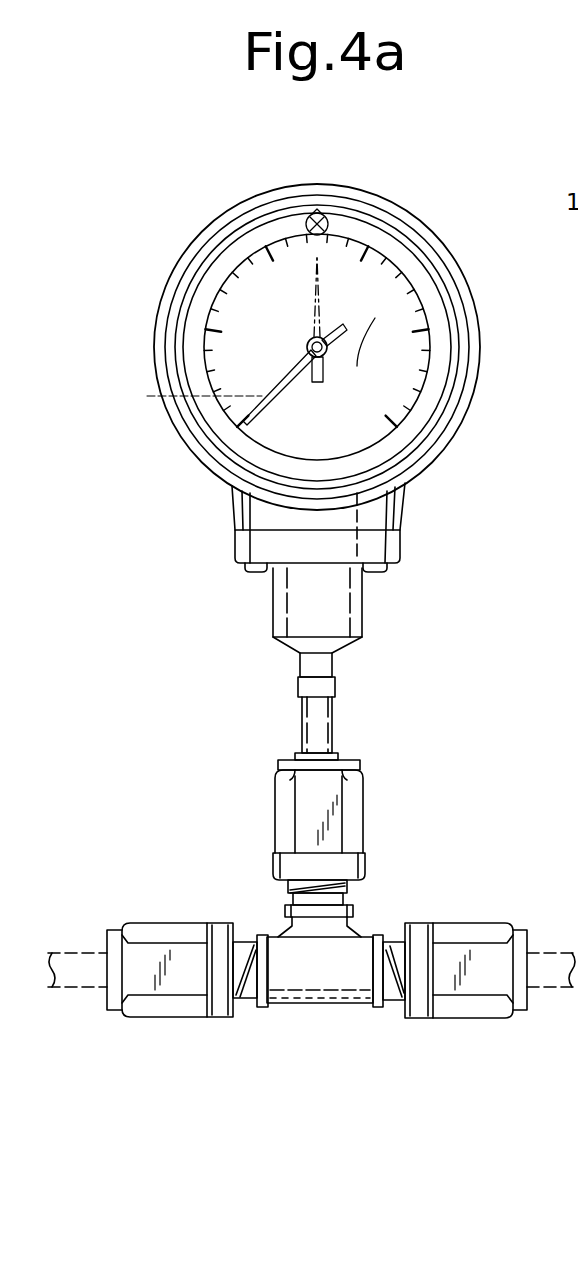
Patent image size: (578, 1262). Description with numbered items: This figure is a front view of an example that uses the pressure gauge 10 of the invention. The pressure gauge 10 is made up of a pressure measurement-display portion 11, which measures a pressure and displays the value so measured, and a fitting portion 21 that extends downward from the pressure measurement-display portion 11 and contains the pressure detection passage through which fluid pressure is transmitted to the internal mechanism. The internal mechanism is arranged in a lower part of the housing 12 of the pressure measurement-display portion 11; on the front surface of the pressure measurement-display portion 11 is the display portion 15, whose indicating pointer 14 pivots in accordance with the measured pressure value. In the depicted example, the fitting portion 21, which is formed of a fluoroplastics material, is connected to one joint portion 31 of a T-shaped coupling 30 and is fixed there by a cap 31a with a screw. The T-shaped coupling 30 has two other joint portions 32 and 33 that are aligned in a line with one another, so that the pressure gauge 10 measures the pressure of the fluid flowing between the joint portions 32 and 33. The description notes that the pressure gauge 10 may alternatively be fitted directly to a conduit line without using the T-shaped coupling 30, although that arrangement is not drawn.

The pressure gauge 10 is at (363, 177).
The pressure measurement-display portion 11 is at (228, 604).
The housing 12 is at (472, 405).
The indicating pointer 14 is at (298, 384).
The display portion 15 is at (375, 318).
The fitting portion 21 is at (258, 696).
The T-shaped coupling 30 is at (333, 1009).
The joint portion 31 is at (372, 832).
The cap 31a is at (372, 832).
The joint portion 32 is at (179, 921).
The joint portion 33 is at (485, 918).